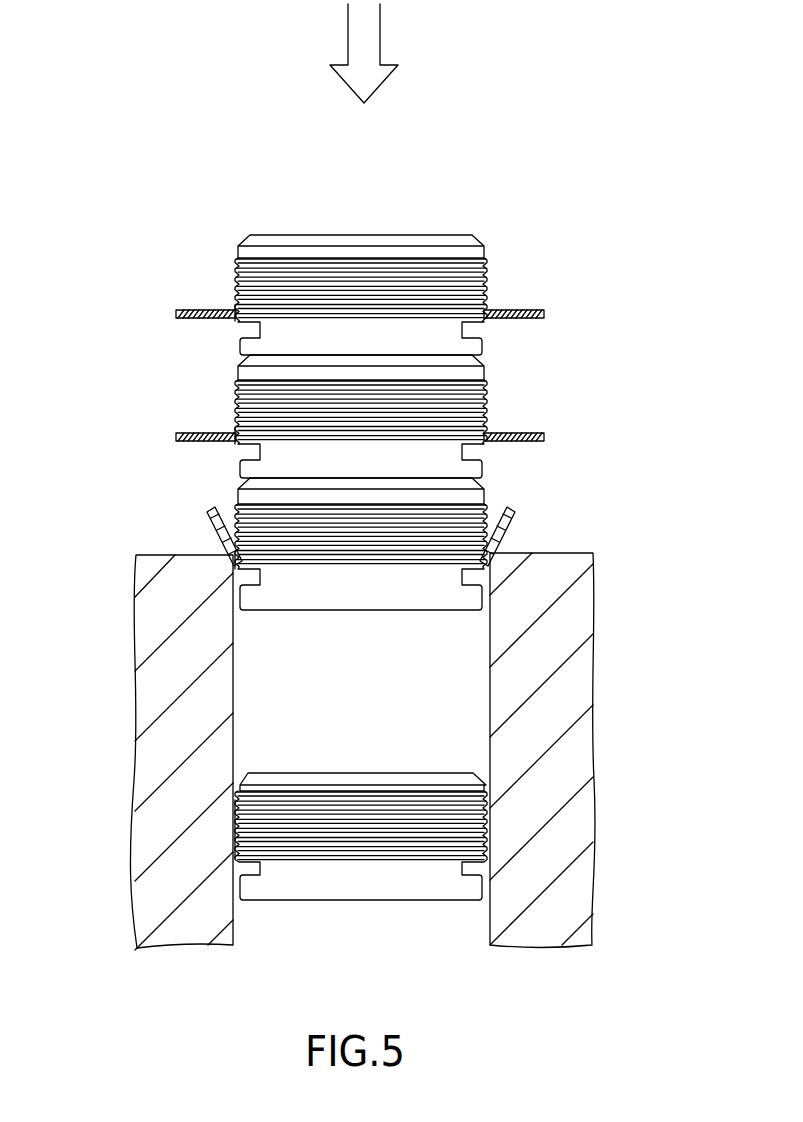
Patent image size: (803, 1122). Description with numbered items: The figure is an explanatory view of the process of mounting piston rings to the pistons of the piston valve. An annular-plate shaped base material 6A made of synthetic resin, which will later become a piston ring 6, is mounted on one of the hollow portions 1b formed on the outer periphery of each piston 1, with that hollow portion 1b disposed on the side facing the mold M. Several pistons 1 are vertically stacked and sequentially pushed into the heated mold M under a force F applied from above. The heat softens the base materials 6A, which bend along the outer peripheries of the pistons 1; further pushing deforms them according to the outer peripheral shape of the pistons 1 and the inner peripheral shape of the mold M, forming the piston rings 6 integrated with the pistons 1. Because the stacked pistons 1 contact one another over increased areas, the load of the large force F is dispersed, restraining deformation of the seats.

The piston 1 is at (482, 248).
The hollow portion 1b is at (231, 316).
The piston ring 6 is at (237, 826).
The base material 6A is at (545, 312).
The mold M is at (150, 831).
The force F is at (380, 40).